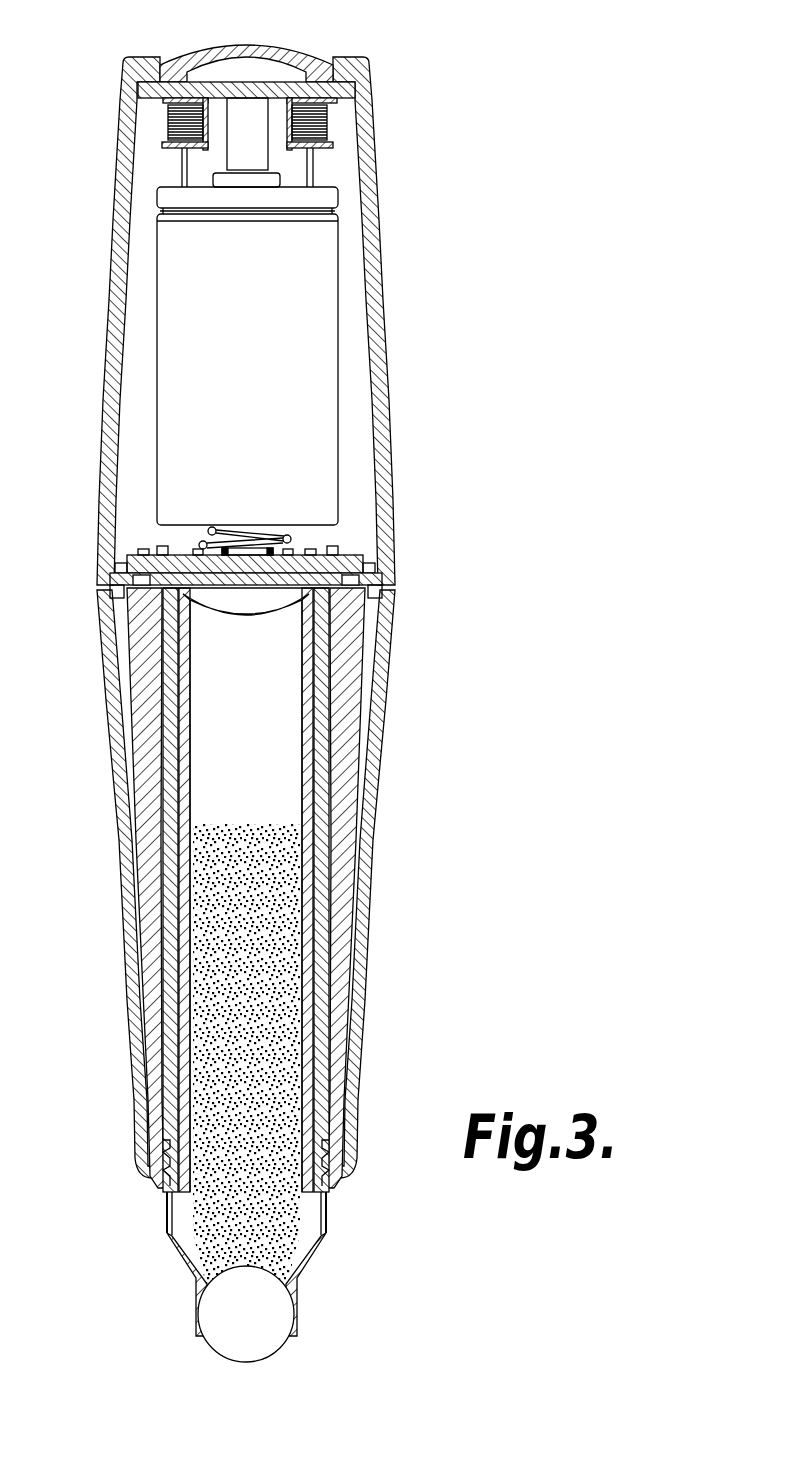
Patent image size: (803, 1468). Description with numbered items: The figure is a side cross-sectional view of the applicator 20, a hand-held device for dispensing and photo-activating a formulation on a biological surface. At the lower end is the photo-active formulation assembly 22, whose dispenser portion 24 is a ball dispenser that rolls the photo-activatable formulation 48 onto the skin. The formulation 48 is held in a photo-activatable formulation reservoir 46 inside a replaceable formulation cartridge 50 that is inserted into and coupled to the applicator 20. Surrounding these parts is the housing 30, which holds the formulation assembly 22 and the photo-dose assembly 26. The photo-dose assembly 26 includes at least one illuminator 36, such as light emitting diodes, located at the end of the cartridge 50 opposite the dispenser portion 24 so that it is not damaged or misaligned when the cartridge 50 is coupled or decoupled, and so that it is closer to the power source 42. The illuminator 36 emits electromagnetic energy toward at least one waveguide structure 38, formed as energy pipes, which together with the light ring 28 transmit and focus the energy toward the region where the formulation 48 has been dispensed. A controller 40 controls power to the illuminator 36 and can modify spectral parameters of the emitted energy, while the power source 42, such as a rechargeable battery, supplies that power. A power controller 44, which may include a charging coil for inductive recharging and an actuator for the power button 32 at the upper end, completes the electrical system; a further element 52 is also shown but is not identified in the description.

The applicator 20 is at (488, 120).
The photo-active formulation assembly 22 is at (328, 1252).
The dispenser portion 24 is at (218, 1342).
The photo-dose assembly 26 is at (140, 1000).
The light ring 28 is at (160, 1190).
The housing 30 is at (386, 405).
The button 32 is at (297, 47).
The illuminator 36 is at (143, 585).
The waveguide structure 38 is at (345, 790).
The controller 40 is at (355, 560).
The power source 42 is at (327, 324).
The power controller 44 is at (112, 83).
The photo-activatable formulation reservoir 46 is at (275, 672).
The photo-activatable formulation 48 is at (258, 972).
The replaceable formulation cartridge 50 is at (310, 878).
The outer sleeve 52 is at (330, 830).